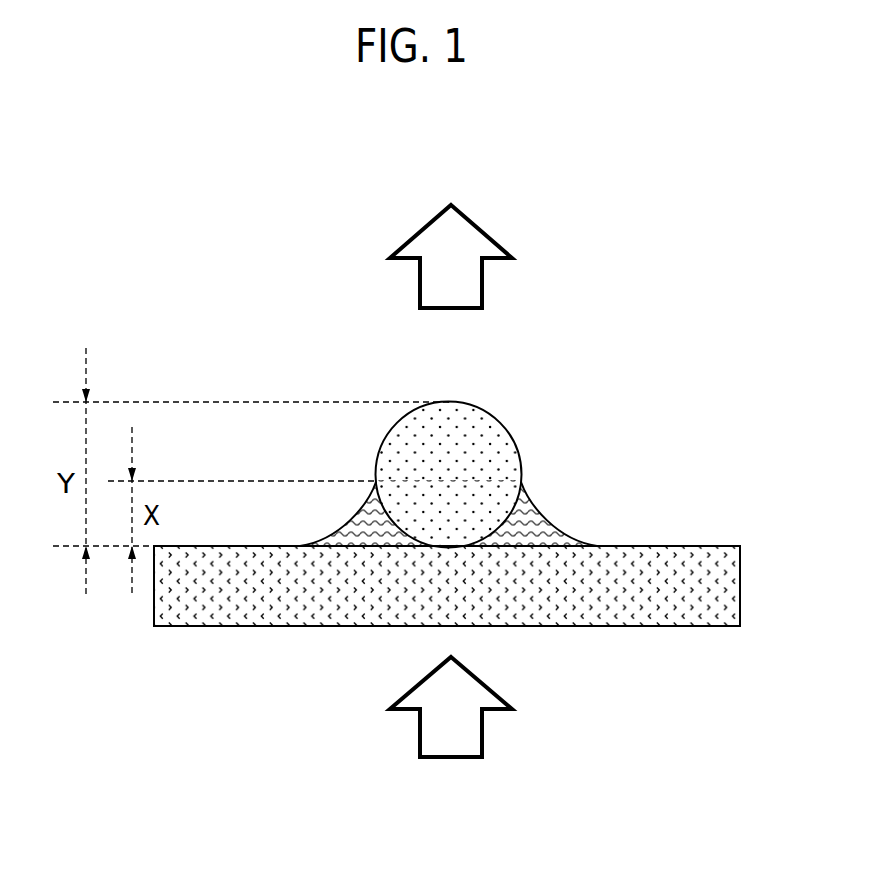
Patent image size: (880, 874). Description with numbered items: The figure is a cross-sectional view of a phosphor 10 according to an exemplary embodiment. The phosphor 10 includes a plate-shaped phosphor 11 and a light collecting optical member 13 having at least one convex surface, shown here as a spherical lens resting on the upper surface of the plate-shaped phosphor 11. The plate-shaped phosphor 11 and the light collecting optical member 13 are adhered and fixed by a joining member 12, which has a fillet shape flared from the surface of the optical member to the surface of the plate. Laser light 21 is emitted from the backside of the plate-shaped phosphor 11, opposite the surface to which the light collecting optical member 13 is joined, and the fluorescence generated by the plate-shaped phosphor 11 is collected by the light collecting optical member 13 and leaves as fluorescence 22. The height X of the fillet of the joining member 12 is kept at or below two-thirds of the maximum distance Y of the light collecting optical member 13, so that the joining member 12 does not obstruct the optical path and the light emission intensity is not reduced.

The phosphor 10 is at (447, 512).
The plate-shaped phosphor 11 is at (262, 600).
The joining member 12 is at (523, 530).
The light collecting optical member 13 is at (492, 445).
The laser light 21 is at (452, 760).
The fluorescence 22 is at (482, 230).